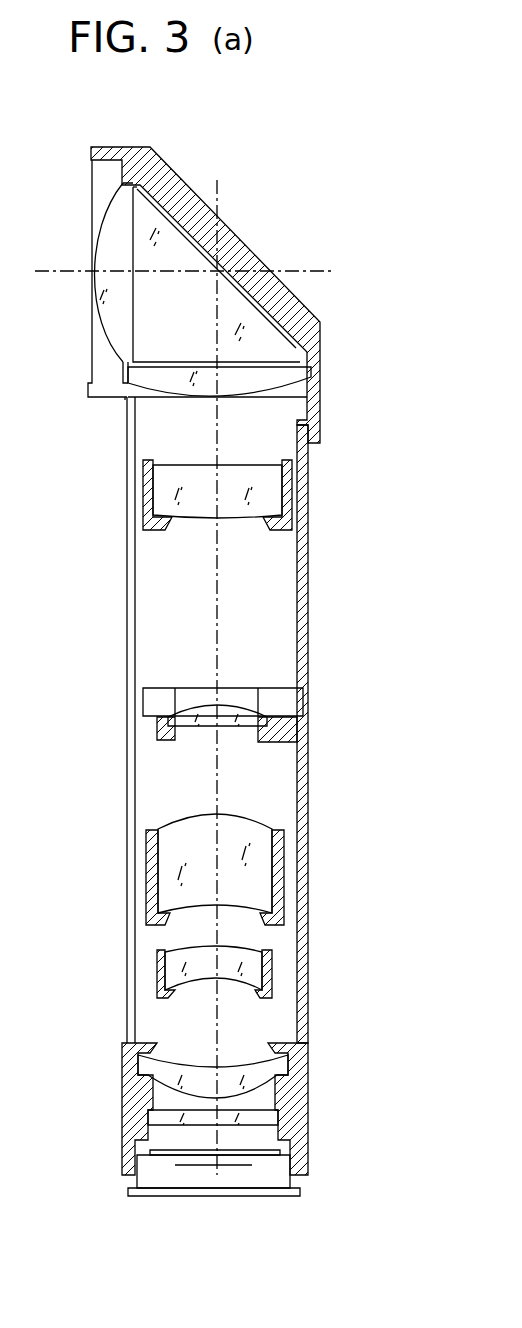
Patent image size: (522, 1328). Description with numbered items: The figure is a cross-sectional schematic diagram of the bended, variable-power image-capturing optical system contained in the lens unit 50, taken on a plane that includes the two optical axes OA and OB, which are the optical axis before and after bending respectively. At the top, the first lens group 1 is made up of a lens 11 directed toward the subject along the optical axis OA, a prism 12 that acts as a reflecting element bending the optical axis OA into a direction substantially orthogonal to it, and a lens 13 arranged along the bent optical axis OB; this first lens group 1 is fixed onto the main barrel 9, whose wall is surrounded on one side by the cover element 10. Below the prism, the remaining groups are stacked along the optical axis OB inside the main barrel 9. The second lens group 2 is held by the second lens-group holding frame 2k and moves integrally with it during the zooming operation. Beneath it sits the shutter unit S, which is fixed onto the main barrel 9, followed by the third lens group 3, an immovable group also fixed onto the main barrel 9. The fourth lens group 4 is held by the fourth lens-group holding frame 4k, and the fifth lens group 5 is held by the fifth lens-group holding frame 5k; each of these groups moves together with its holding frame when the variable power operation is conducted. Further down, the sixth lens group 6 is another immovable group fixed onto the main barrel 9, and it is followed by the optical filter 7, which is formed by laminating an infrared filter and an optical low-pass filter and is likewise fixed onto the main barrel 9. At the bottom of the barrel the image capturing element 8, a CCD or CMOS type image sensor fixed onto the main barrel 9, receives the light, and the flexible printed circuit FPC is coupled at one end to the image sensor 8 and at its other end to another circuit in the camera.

The first lens group 1 is at (236, 122).
The lens 11 is at (110, 172).
The prism 12 is at (190, 235).
The lens 13 is at (273, 372).
The lens unit 50 is at (357, 351).
The optical axis OA is at (181, 242).
The optical axis OB is at (218, 603).
The cover element 10 is at (127, 617).
The main barrel 9 is at (302, 787).
The second lens group 2 is at (270, 477).
The second lens-group holding frame 2k is at (283, 502).
The shutter unit S is at (145, 708).
The third lens group 3 is at (228, 723).
The fourth lens group 4 is at (260, 873).
The fourth lens-group holding frame 4k is at (283, 905).
The fifth lens group 5 is at (255, 970).
The fifth lens-group holding frame 5k is at (272, 995).
The sixth lens group 6 is at (282, 1063).
The optical filter 7 is at (280, 1118).
The image capturing element 8 is at (292, 1177).
The flexible printed circuit FPC is at (197, 1197).